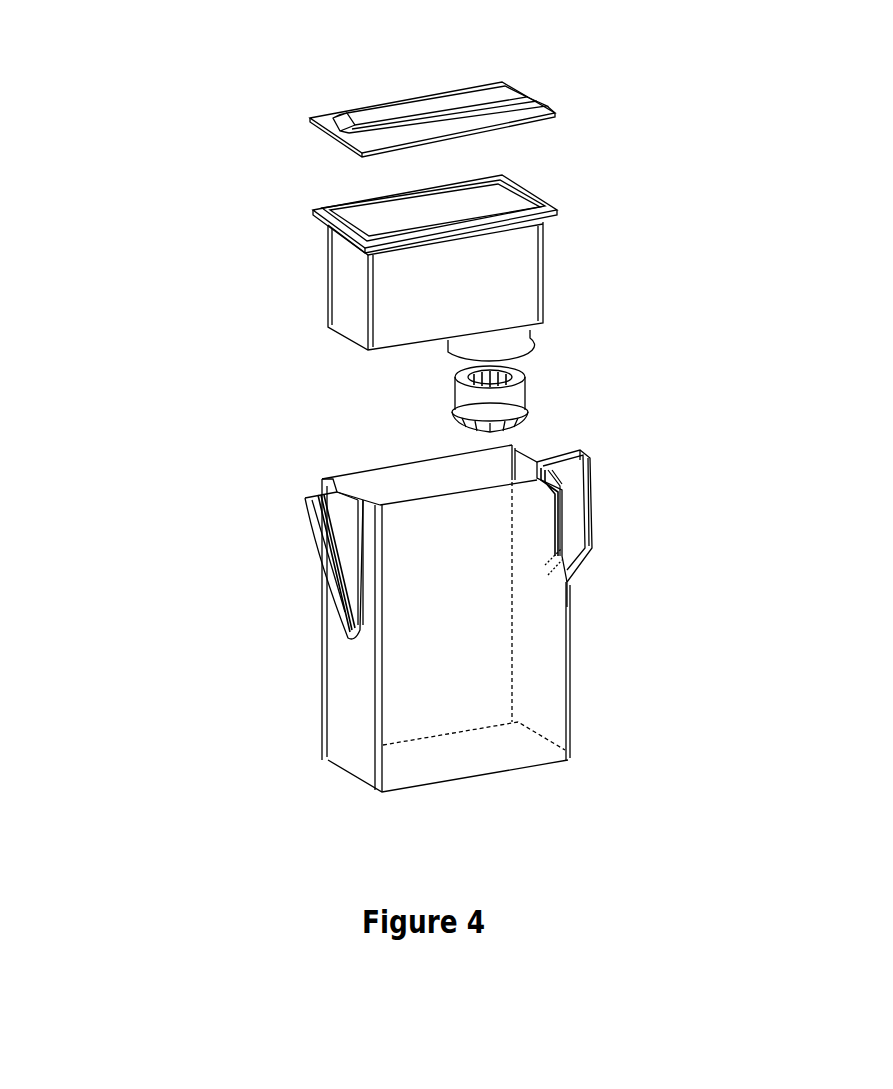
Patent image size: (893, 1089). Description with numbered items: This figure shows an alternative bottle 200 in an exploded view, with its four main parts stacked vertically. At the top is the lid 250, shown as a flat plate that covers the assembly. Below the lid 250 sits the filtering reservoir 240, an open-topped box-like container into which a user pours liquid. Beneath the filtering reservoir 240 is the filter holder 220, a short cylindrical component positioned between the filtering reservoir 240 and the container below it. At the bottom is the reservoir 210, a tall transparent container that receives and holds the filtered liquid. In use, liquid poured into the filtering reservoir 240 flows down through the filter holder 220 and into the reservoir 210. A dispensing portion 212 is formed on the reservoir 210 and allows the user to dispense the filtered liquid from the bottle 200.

The bottle 200 is at (188, 91).
The lid 250 is at (512, 102).
The filtering reservoir 240 is at (500, 283).
The filter holder 220 is at (502, 401).
The reservoir 210 is at (502, 617).
The dispensing portion 212 is at (343, 538).